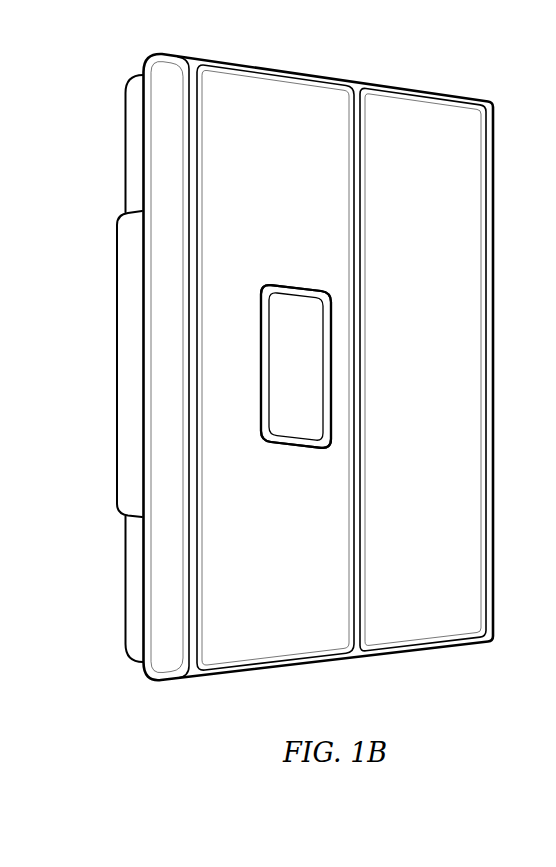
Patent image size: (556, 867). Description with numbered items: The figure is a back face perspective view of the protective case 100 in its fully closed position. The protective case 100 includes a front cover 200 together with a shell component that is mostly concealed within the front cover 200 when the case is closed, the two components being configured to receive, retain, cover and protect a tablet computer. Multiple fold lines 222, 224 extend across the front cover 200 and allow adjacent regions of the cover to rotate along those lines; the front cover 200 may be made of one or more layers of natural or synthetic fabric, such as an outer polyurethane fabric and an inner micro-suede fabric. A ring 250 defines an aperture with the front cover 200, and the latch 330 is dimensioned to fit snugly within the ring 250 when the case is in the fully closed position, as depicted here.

The protective case 100 is at (430, 57).
The front cover component 200 is at (452, 160).
The fold line 222 is at (193, 103).
The fold line 224 is at (357, 120).
The ring 250 is at (247, 414).
The latch 330 is at (287, 348).